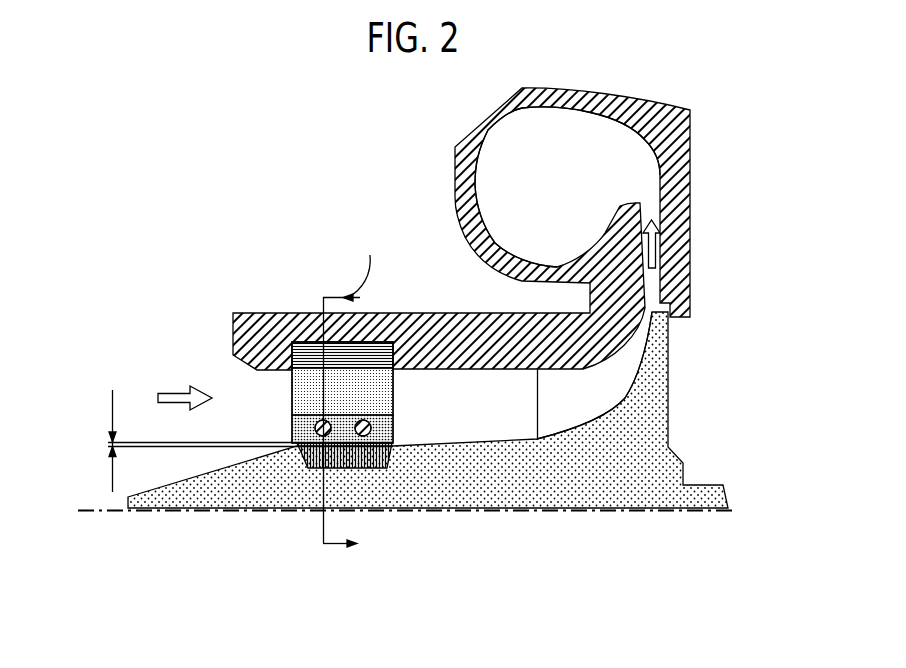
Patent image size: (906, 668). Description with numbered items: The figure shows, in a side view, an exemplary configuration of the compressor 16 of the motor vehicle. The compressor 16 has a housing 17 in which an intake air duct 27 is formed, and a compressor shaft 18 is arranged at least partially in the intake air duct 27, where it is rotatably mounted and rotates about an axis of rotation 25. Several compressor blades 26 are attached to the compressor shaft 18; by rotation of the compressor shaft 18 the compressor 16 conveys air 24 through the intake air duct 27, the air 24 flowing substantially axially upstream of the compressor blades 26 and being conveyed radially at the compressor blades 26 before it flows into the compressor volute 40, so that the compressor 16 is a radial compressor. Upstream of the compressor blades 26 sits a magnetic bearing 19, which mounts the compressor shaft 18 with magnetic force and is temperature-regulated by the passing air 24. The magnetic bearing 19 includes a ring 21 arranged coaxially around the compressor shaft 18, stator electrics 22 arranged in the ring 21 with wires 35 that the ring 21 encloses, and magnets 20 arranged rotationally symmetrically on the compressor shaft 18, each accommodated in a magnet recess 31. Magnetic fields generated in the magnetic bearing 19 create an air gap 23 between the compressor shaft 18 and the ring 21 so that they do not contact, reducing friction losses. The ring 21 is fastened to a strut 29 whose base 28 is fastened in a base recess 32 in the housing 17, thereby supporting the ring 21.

The compressor 16 is at (224, 168).
The housing 17 is at (255, 313).
The compressor shaft 18 is at (470, 488).
The magnetic bearing 19 is at (312, 490).
The magnets 20 is at (368, 468).
The ring 21 is at (395, 447).
The stator electrics 22 is at (300, 431).
The air gap 23 is at (110, 407).
The air 24 is at (668, 250).
The axis of rotation 25 is at (92, 514).
The compressor blades 26 is at (618, 388).
The intake air duct 27 is at (462, 426).
The base 28 is at (305, 312).
The strut 29 is at (388, 392).
The magnet recess 31 is at (343, 468).
The base recess 32 is at (340, 312).
The wires 35 is at (368, 430).
The compressor volute 40 is at (545, 194).